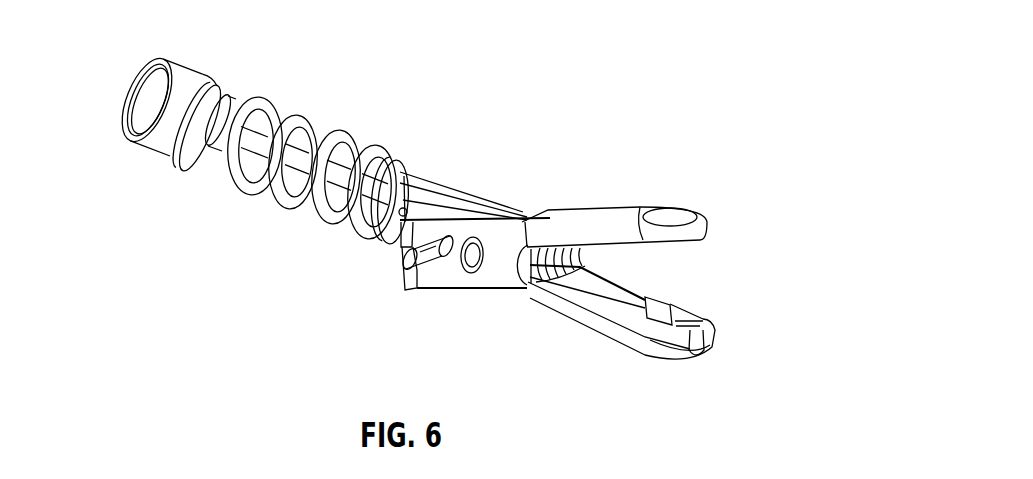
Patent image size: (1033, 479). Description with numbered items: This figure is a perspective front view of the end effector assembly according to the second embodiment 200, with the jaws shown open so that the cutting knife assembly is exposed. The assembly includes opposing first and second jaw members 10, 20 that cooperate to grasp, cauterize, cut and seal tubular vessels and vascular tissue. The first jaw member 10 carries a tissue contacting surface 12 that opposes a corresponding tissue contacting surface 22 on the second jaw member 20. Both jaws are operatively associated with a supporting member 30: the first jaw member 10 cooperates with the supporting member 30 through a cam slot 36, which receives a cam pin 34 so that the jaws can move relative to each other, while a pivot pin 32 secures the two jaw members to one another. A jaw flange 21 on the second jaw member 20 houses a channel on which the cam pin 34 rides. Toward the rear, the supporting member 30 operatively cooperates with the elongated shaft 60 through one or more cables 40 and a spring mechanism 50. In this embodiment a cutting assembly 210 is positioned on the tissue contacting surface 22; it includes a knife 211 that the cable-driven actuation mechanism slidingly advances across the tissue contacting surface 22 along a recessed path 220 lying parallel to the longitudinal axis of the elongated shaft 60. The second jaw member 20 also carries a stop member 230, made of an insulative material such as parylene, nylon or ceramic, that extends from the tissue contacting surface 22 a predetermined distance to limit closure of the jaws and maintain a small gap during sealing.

The second embodiment 200 is at (576, 114).
The first jaw member 10 is at (670, 206).
The tissue contacting surface 12 is at (672, 257).
The second jaw member 20 is at (667, 365).
The jaw flange 21 is at (503, 248).
The tissue contacting surface 22 is at (625, 292).
The supporting member 30 is at (427, 178).
The pivot pin 32 is at (462, 262).
The cam pin 34 is at (410, 281).
The cam slot 36 is at (407, 256).
The cables 40 is at (290, 183).
The spring mechanism 50 is at (238, 182).
The elongated shaft 60 is at (167, 152).
The cutting assembly 210 is at (680, 292).
The knife 211 is at (677, 312).
The recessed path 220 is at (606, 301).
The stop member 230 is at (700, 351).